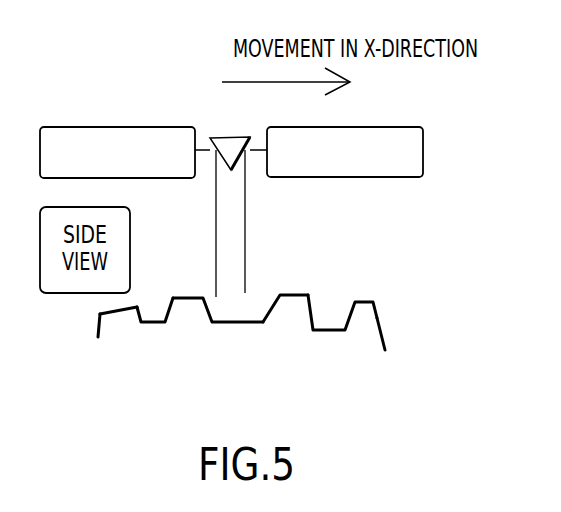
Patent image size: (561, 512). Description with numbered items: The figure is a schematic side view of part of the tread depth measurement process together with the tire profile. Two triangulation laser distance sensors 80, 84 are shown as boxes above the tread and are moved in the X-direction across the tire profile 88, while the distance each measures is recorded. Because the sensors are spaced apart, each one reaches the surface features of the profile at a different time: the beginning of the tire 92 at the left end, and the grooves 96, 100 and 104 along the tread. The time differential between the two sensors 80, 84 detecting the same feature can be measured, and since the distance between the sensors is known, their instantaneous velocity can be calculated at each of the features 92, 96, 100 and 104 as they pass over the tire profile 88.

The laser distance sensor 84 is at (108, 127).
The laser distance sensor 80 is at (362, 127).
The tire profile 88 is at (96, 333).
The surface feature (beginning of the tire) 92 is at (96, 315).
The groove 96 is at (157, 313).
The groove 100 is at (250, 317).
The groove 104 is at (381, 317).